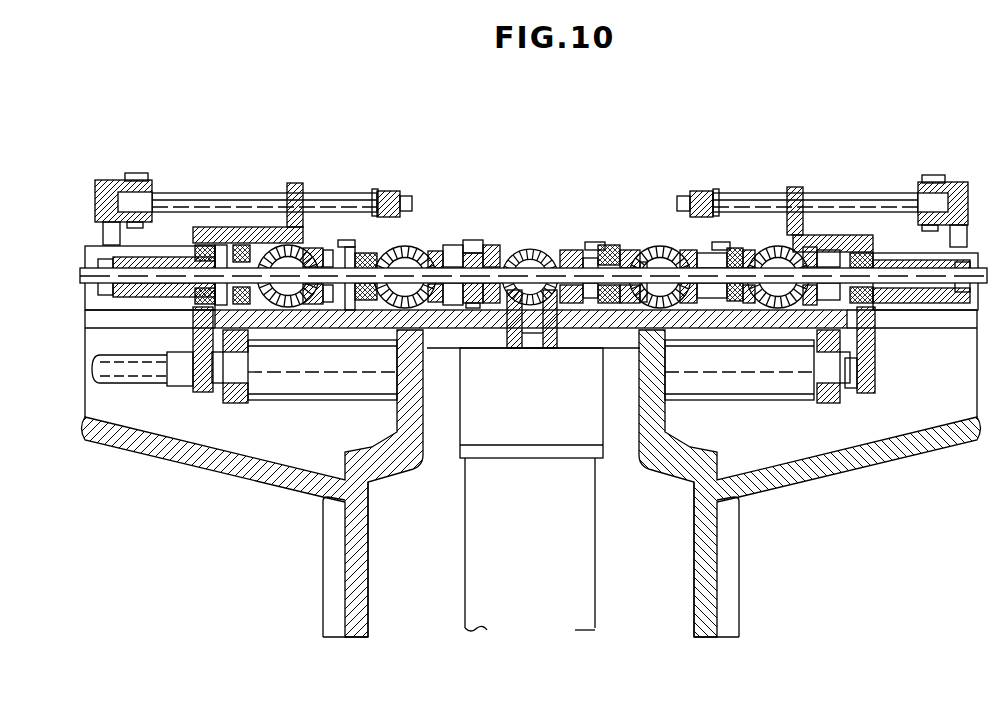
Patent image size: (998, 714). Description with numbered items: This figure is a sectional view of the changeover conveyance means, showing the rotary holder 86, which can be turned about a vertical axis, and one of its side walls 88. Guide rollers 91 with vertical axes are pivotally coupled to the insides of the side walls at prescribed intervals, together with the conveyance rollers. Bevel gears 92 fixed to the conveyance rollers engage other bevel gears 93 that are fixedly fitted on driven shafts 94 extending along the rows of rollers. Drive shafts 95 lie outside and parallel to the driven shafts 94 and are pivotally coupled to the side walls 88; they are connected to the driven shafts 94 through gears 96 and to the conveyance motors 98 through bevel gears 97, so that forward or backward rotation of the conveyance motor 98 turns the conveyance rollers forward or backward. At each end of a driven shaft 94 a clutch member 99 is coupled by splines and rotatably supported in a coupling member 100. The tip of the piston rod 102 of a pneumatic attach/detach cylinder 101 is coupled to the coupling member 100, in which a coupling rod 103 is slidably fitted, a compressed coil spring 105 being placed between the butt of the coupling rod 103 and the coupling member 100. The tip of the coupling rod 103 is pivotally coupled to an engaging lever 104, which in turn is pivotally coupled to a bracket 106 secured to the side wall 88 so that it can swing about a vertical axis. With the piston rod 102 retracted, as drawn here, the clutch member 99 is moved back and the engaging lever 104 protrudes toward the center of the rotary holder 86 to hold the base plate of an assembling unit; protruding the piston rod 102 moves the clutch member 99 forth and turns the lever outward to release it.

The rotary holder 86 is at (265, 515).
The side wall 88 is at (372, 585).
The guide roller 91 is at (350, 242).
The bevel gear 92 is at (405, 248).
The bevel gear 93 is at (680, 252).
The driven shaft 94 is at (255, 272).
The drive shaft 95 is at (475, 242).
The gear 96 is at (493, 284).
The bevel gear 97 is at (490, 340).
The conveyance motor 98 is at (480, 530).
The clutch member 99 is at (96, 250).
The coupling member 100 is at (222, 228).
The pneumatic attach/detach cylinder 101 is at (315, 382).
The piston rod 102 is at (233, 370).
The coupling rod 103 is at (187, 192).
The engaging lever 104 is at (105, 180).
The compressed coil spring 105 is at (342, 192).
The bracket 106 is at (140, 175).